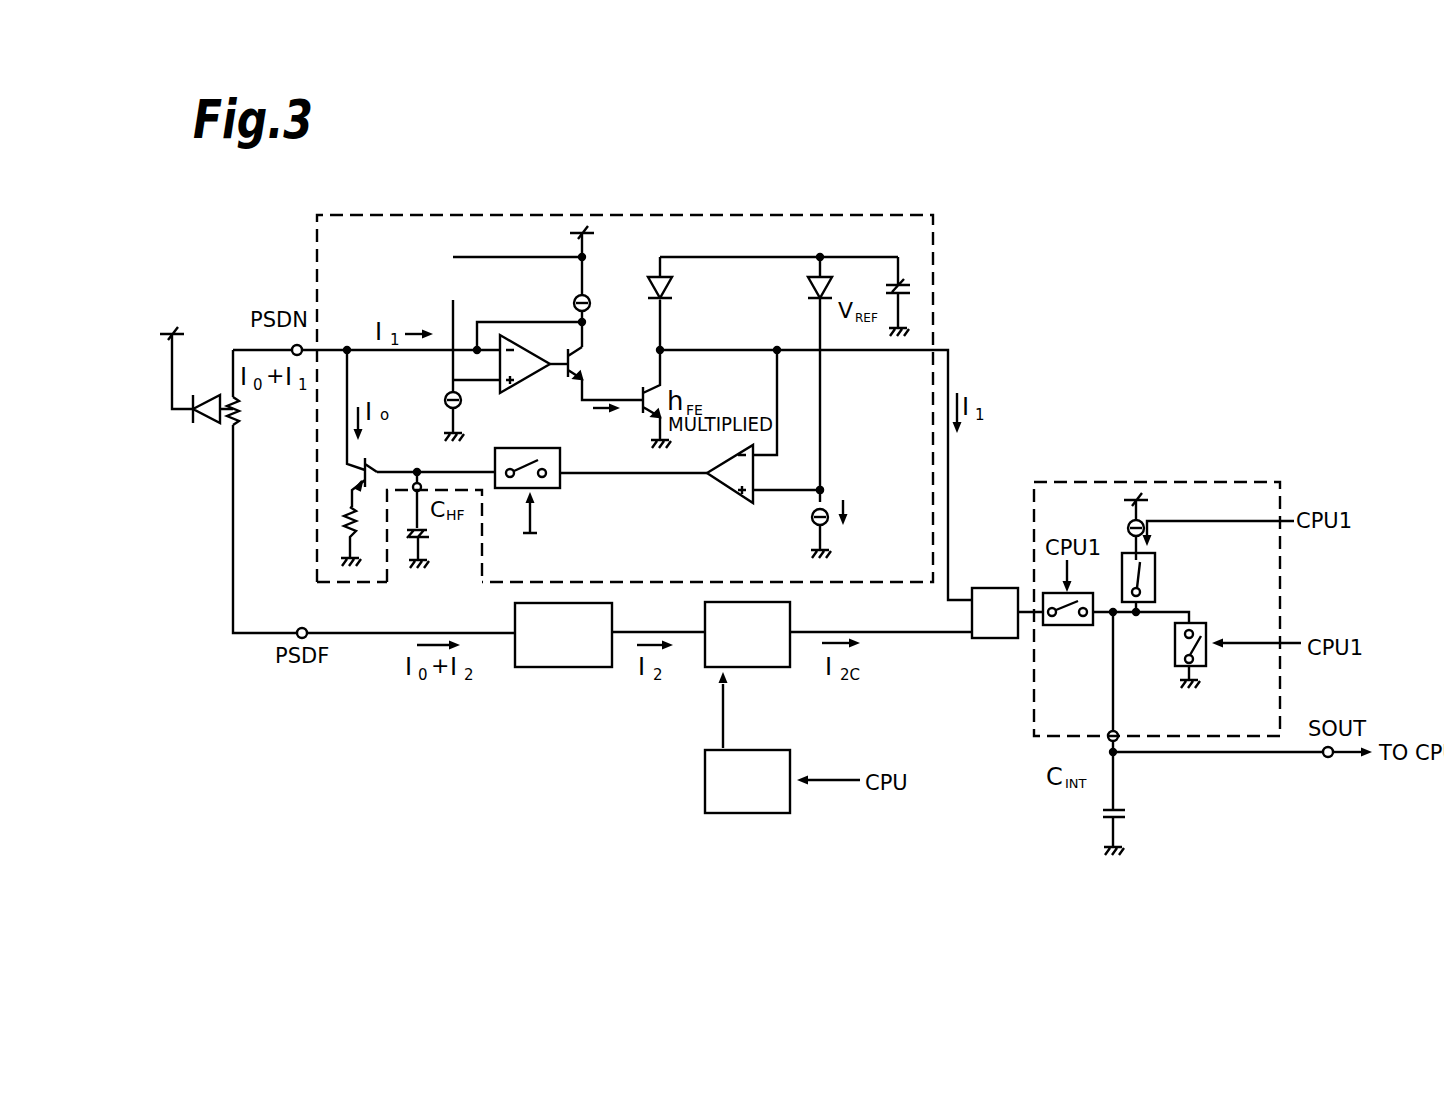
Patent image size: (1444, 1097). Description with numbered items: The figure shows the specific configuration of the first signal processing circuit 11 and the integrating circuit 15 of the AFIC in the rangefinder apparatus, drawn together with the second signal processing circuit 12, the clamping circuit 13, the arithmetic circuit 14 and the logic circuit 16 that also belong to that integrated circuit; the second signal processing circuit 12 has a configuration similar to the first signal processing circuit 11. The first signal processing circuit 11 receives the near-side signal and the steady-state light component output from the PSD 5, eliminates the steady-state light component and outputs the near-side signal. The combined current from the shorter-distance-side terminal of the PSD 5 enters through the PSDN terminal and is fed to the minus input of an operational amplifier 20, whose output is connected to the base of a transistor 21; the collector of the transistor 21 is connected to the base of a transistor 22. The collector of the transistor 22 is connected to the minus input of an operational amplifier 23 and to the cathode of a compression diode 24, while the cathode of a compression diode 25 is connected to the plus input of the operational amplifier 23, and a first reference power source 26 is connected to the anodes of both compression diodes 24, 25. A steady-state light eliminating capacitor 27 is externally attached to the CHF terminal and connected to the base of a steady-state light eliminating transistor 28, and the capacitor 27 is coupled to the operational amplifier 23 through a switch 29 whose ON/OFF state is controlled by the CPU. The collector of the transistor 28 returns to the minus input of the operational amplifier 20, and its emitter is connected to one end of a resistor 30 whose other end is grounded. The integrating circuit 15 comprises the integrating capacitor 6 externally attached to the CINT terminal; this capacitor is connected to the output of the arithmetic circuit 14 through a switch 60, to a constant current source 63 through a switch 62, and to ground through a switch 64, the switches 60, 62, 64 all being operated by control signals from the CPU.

The PSD 5 is at (217, 398).
The integrating capacitor 6 is at (1125, 812).
The first signal processing circuit 11 is at (542, 213).
The second signal processing circuit 12 is at (560, 668).
The clamping circuit 13 is at (745, 668).
The arithmetic circuit 14 is at (1002, 588).
The integrating circuit 15 is at (1212, 479).
The logic circuit 16 is at (745, 815).
The operational amplifier 20 is at (528, 387).
The transistor 21 is at (567, 380).
The transistor 22 is at (640, 411).
The operational amplifier 23 is at (732, 490).
The compression diode 24 is at (650, 282).
The compression diode 25 is at (808, 289).
The first reference power source 26 is at (905, 283).
The steady-state light eliminating capacitor 27 is at (430, 539).
The steady-state light eliminating transistor 28 is at (412, 459).
The switch 29 is at (561, 487).
The resistor 30 is at (345, 528).
The switch 60 is at (1073, 627).
The switch 62 is at (1122, 553).
The constant current source 63 is at (1141, 523).
The switch 64 is at (1206, 627).